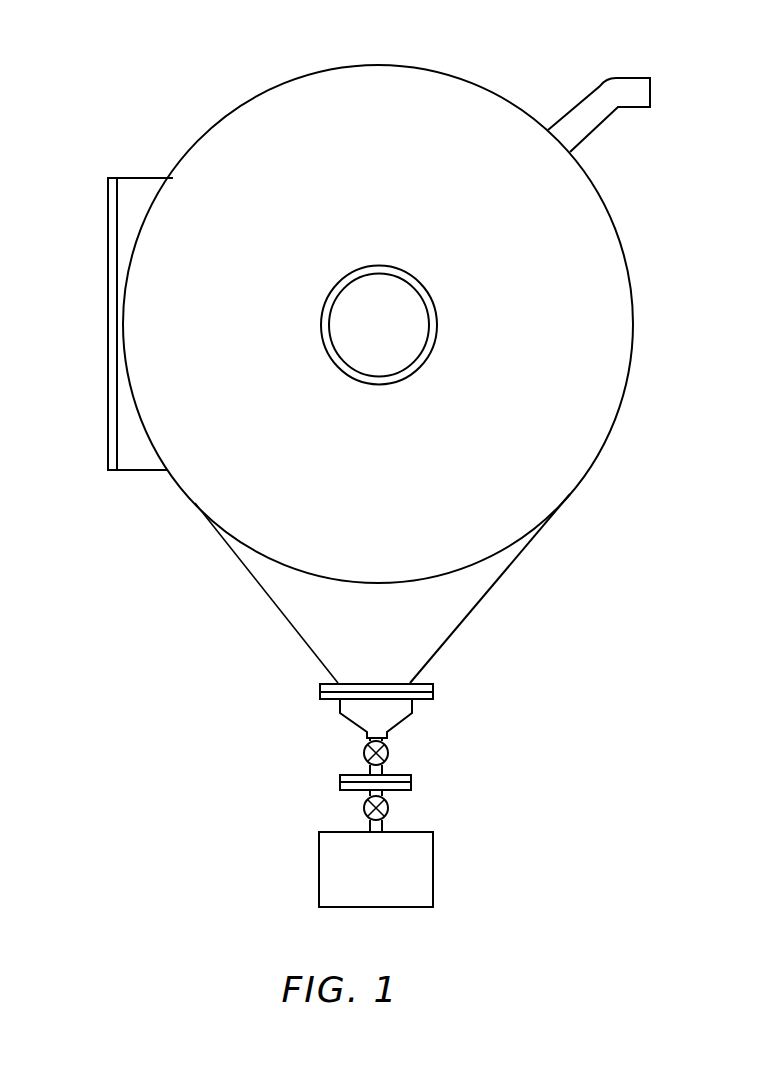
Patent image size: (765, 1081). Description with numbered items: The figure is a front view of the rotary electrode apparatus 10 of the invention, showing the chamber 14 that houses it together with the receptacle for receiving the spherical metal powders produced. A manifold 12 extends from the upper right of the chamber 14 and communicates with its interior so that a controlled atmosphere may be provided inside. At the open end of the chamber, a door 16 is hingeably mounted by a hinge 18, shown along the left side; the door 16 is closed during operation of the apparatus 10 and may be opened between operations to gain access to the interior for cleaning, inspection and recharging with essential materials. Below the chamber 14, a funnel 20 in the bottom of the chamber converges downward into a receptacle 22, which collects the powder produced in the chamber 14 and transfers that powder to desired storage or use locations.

The rotary electrode apparatus 10 is at (186, 42).
The manifold 12 is at (626, 80).
The chamber 14 is at (318, 72).
The door 16 is at (218, 143).
The hinge 18 is at (108, 428).
The funnel 20 is at (292, 620).
The receptacle 22 is at (342, 712).